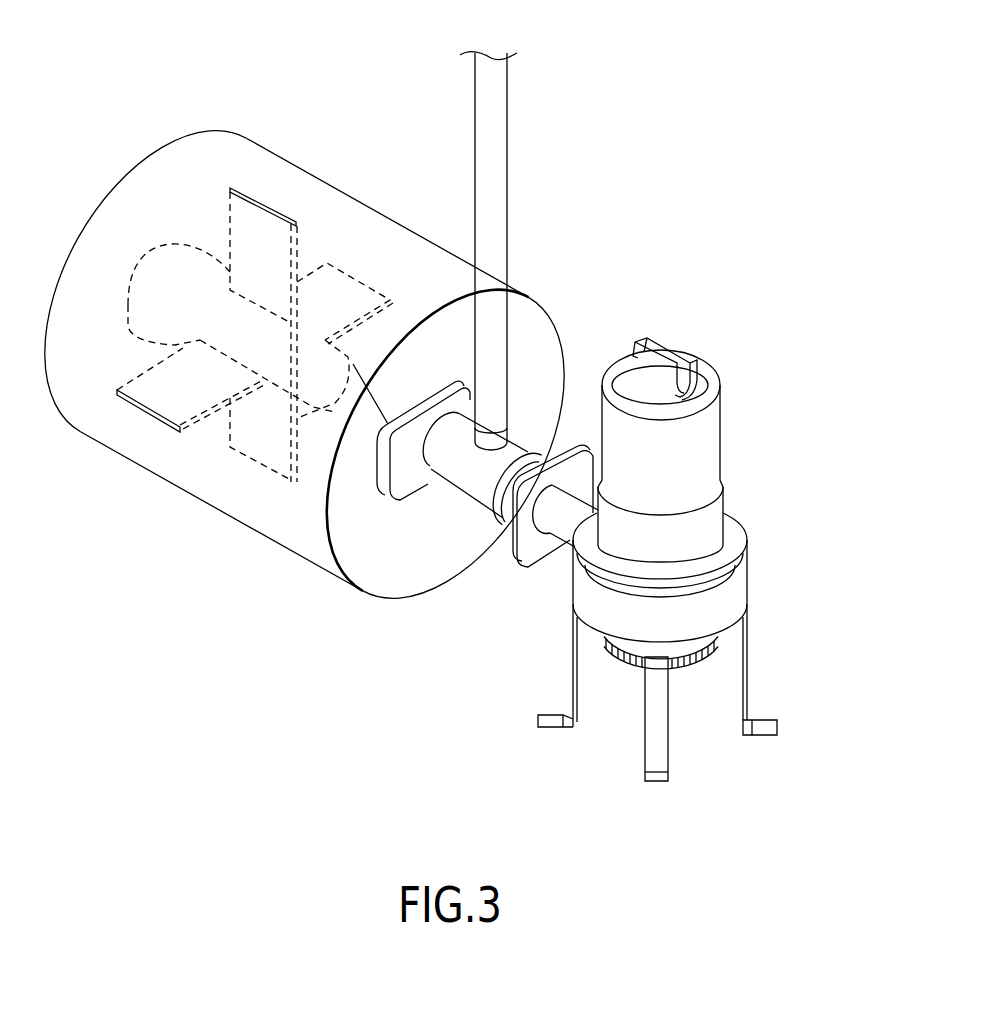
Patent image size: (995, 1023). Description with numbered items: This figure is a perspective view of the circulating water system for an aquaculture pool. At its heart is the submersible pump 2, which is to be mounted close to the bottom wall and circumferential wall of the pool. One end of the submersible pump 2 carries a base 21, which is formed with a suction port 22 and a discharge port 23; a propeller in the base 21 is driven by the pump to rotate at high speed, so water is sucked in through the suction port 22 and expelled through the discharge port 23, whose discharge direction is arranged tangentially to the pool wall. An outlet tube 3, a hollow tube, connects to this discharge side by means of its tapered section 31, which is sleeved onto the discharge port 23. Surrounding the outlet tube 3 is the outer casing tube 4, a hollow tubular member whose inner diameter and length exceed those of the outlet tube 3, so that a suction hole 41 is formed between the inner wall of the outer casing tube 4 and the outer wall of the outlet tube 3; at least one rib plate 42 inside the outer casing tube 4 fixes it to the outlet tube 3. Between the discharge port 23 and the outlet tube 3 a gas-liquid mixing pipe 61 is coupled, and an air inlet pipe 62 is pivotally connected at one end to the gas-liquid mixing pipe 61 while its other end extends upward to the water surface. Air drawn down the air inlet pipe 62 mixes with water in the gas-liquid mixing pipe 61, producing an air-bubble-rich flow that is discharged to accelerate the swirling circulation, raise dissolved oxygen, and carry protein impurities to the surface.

The submersible pump 2 is at (693, 460).
The base 21 is at (733, 595).
The suction port 22 is at (683, 668).
The discharge port 23 is at (530, 470).
The outlet tube 3 is at (172, 296).
The tapered section 31 is at (323, 380).
The outer casing tube 4 is at (318, 553).
The suction hole 41 is at (450, 350).
The rib plate 42 is at (327, 267).
The gas-liquid mixing pipe 61 is at (477, 483).
The air inlet pipe 62 is at (493, 158).